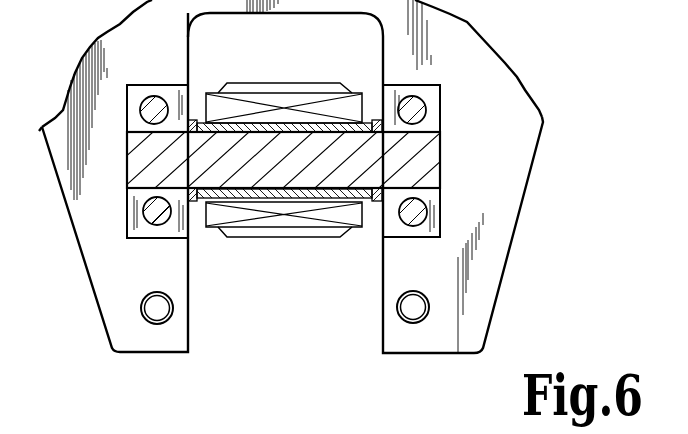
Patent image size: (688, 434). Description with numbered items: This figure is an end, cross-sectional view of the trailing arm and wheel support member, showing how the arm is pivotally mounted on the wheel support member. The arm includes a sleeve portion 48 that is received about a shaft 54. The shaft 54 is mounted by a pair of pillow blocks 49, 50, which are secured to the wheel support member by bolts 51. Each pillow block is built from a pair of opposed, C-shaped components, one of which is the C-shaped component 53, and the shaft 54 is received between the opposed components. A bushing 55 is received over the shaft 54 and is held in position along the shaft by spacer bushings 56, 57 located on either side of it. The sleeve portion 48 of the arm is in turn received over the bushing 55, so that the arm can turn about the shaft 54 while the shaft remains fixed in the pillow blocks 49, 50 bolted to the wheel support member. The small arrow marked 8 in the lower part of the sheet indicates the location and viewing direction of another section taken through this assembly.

The upper bearing 48 is at (313, 95).
The upper left bearing retainer block 49 is at (127, 118).
The upper right bearing retainer block 50 is at (440, 117).
The bolt 51 is at (418, 100).
The lower right bearing retainer block 53 is at (432, 218).
The shaft 54 is at (428, 165).
The lower bearing 55 is at (305, 197).
The bearing spacer 56 is at (193, 202).
The bearing spacer 57 is at (377, 203).
The section line 8- 8 is at (350, 432).